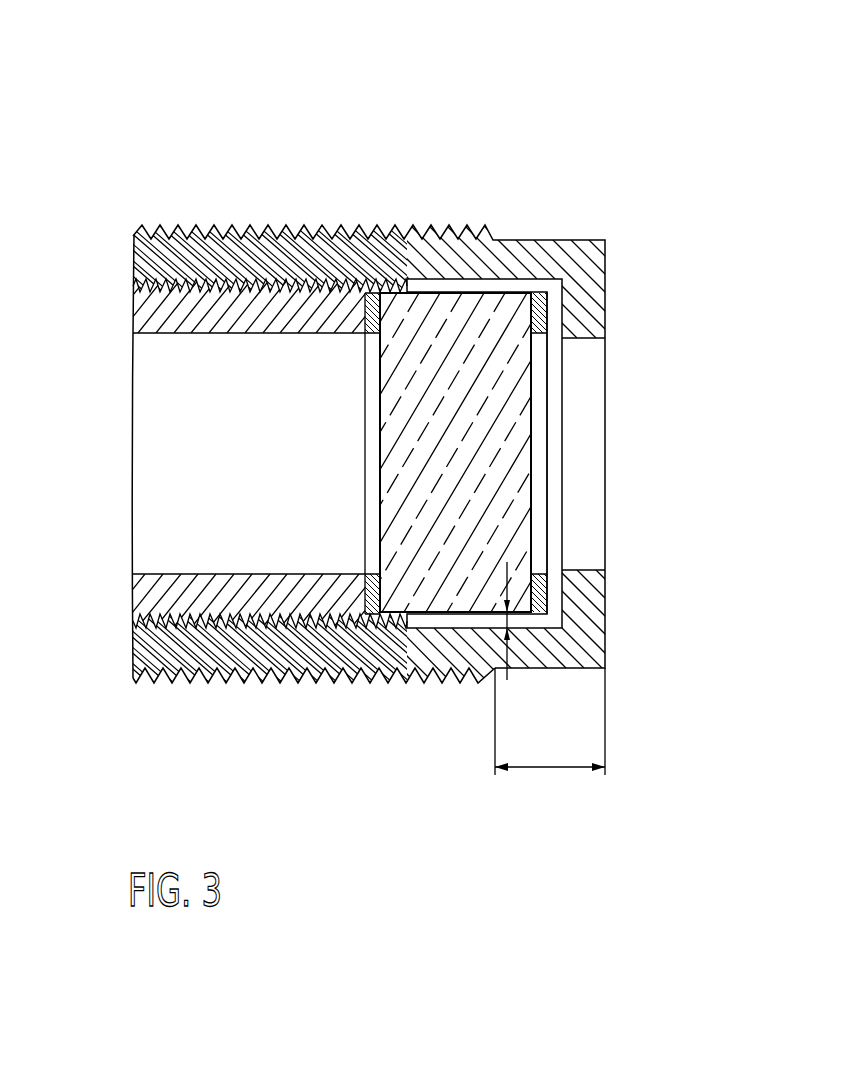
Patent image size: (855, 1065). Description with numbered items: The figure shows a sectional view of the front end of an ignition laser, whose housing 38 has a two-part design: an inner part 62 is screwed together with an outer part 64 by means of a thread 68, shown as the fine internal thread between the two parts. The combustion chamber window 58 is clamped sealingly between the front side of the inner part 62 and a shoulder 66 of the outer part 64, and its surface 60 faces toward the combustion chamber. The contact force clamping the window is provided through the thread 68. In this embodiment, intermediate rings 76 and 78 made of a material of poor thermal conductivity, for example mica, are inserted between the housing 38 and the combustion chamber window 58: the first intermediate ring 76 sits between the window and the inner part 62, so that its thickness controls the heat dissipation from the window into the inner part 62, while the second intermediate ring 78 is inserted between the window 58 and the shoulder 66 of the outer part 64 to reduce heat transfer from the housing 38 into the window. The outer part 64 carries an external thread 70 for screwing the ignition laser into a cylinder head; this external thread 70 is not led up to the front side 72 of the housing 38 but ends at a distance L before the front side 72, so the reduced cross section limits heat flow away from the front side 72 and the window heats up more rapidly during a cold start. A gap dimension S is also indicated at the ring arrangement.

The housing 38 is at (480, 150).
The combustion chamber window 58 is at (433, 420).
The surface of combustion chamber window 60 is at (533, 480).
The inner part 62 is at (175, 598).
The outer part 64 is at (257, 652).
The shoulder 66 is at (555, 318).
The thread 68 is at (257, 282).
The external thread 70 is at (397, 687).
The front side 72 is at (606, 604).
The first intermediate ring 76 is at (369, 300).
The second intermediate ring 78 is at (546, 300).
The gap width S is at (507, 625).
The distance L is at (547, 770).